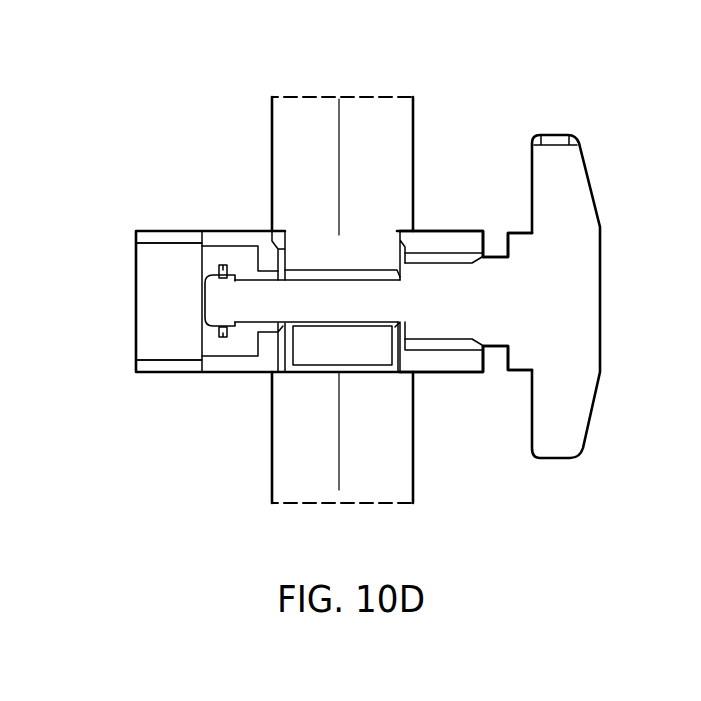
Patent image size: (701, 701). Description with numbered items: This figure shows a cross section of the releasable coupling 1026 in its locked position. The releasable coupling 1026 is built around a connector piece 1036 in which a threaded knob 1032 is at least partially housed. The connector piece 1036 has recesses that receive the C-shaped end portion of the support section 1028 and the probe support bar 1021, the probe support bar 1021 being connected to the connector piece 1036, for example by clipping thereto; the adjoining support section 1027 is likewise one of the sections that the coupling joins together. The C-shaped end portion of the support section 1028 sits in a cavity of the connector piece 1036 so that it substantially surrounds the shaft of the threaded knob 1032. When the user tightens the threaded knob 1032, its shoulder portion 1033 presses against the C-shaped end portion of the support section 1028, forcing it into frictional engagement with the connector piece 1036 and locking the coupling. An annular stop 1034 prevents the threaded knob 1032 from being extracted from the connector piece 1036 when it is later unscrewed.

The releasable coupling 1026 is at (400, 272).
The support section 1028 is at (288, 126).
The support section 1027 is at (280, 482).
The probe support bar 1021 is at (160, 353).
The shoulder portion 1033 is at (417, 280).
The annular stop 1034 is at (222, 266).
The connector piece 1036 is at (442, 363).
The threaded knob 1032 is at (583, 342).